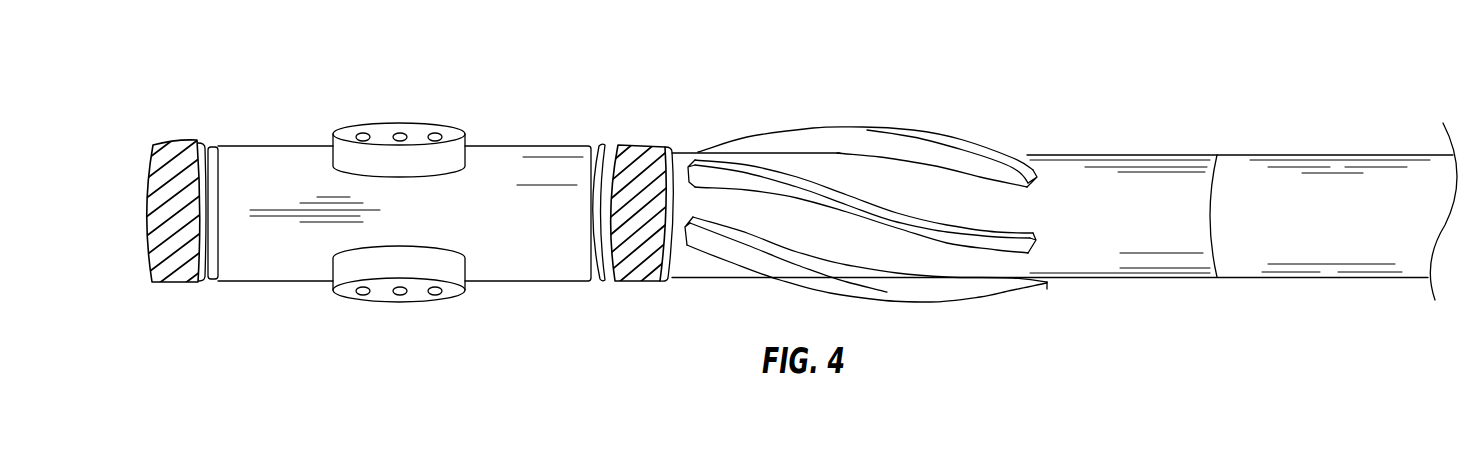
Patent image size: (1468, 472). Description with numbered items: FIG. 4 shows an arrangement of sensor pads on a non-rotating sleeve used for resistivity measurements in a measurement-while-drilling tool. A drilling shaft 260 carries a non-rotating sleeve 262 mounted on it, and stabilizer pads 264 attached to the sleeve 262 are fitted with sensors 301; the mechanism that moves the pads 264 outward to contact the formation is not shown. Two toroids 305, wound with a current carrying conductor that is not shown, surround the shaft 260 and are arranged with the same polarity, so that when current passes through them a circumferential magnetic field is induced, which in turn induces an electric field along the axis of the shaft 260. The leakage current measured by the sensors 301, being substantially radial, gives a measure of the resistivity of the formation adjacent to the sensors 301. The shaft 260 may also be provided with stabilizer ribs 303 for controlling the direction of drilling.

The drilling shaft 260 is at (1098, 153).
The non-rotating sleeve 262 is at (550, 145).
The pads 264 is at (466, 134).
The sensors 301 is at (397, 134).
The stabilizer ribs 303 is at (925, 130).
The toroids 305 is at (175, 282).